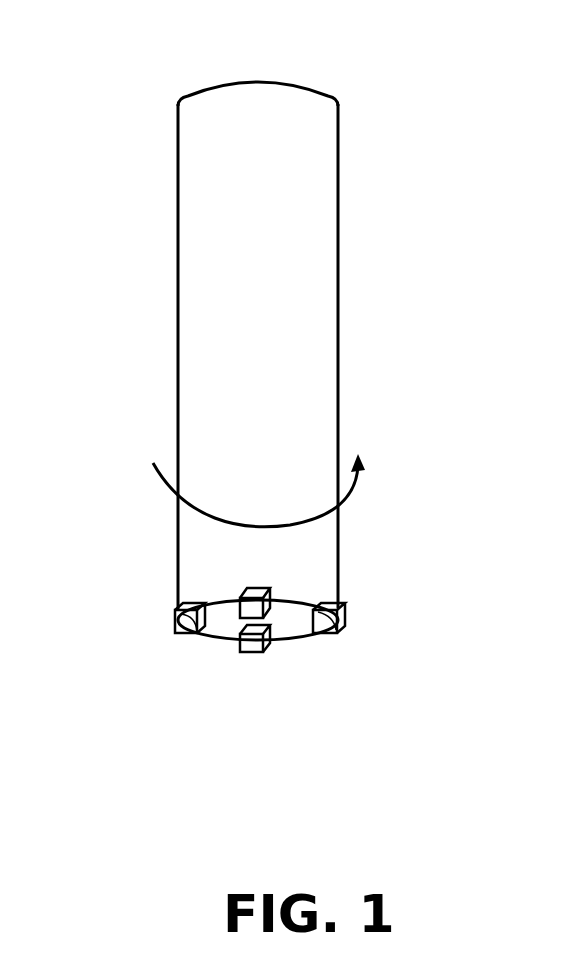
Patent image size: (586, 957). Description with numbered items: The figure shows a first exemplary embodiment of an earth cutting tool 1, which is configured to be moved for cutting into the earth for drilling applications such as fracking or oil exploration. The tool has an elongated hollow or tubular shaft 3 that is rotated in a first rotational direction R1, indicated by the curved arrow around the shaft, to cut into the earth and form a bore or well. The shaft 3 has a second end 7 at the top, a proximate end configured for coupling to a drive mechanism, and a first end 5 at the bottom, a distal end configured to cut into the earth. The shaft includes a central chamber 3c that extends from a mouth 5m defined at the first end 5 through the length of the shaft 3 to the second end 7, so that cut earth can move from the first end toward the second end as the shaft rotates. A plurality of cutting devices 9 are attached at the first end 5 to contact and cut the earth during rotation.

The earth cutting tool 1 is at (376, 136).
The shaft 3 is at (340, 262).
The central chamber 3c is at (218, 625).
The first end 5 is at (168, 616).
The mouth 5m is at (233, 634).
The second end 7 is at (217, 97).
The cutting devices 9 is at (268, 650).
The first rotational direction R1 is at (343, 517).